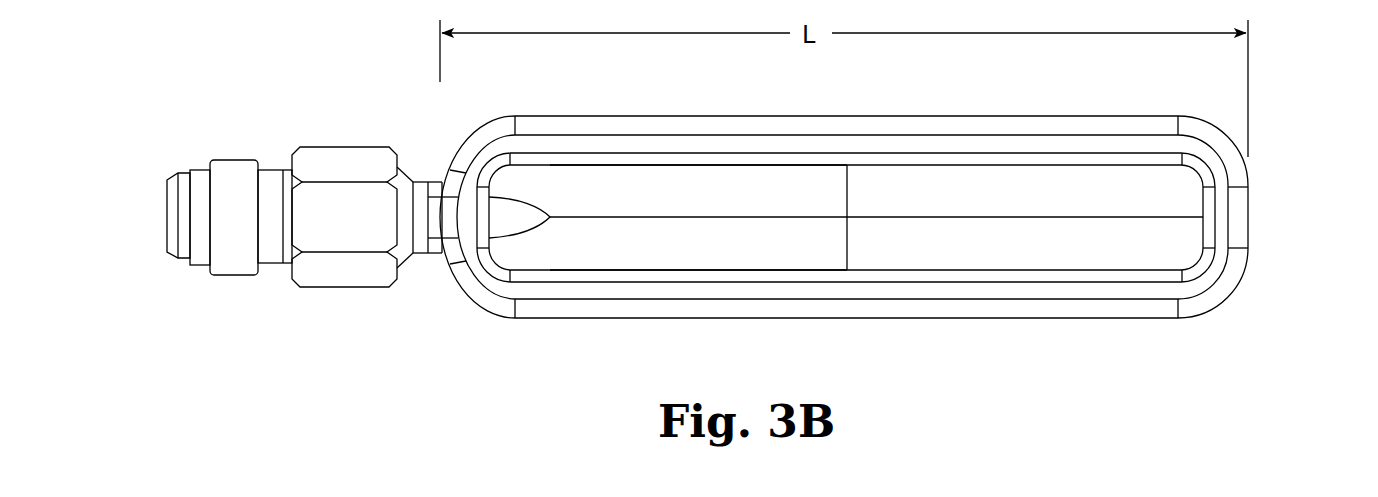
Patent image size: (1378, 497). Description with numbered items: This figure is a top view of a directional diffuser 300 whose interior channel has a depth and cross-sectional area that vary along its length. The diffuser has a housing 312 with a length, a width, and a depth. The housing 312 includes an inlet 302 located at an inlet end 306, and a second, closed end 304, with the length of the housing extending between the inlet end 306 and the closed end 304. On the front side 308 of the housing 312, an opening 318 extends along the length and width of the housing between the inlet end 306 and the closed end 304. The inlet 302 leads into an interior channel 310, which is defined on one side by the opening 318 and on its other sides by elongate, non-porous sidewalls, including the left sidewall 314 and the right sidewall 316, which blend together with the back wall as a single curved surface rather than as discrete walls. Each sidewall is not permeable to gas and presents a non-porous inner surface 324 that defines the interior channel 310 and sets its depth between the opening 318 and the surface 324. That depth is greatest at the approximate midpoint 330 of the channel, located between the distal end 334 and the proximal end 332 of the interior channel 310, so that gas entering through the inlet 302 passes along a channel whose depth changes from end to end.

The directional diffuser 300 is at (1267, 101).
The inlet 302 is at (167, 193).
The closed end 304 is at (1275, 164).
The inlet end 306 is at (334, 113).
The front side 308 is at (663, 318).
The interior channel 310 is at (905, 204).
The housing 312 is at (1250, 250).
The left sidewall 314 is at (890, 318).
The right sidewall 316 is at (897, 115).
The opening 318 is at (1147, 318).
The non-porous inner surface 324 is at (728, 207).
The midpoint 330 is at (825, 335).
The proximal end 332 is at (471, 325).
The distal end 334 is at (1185, 329).